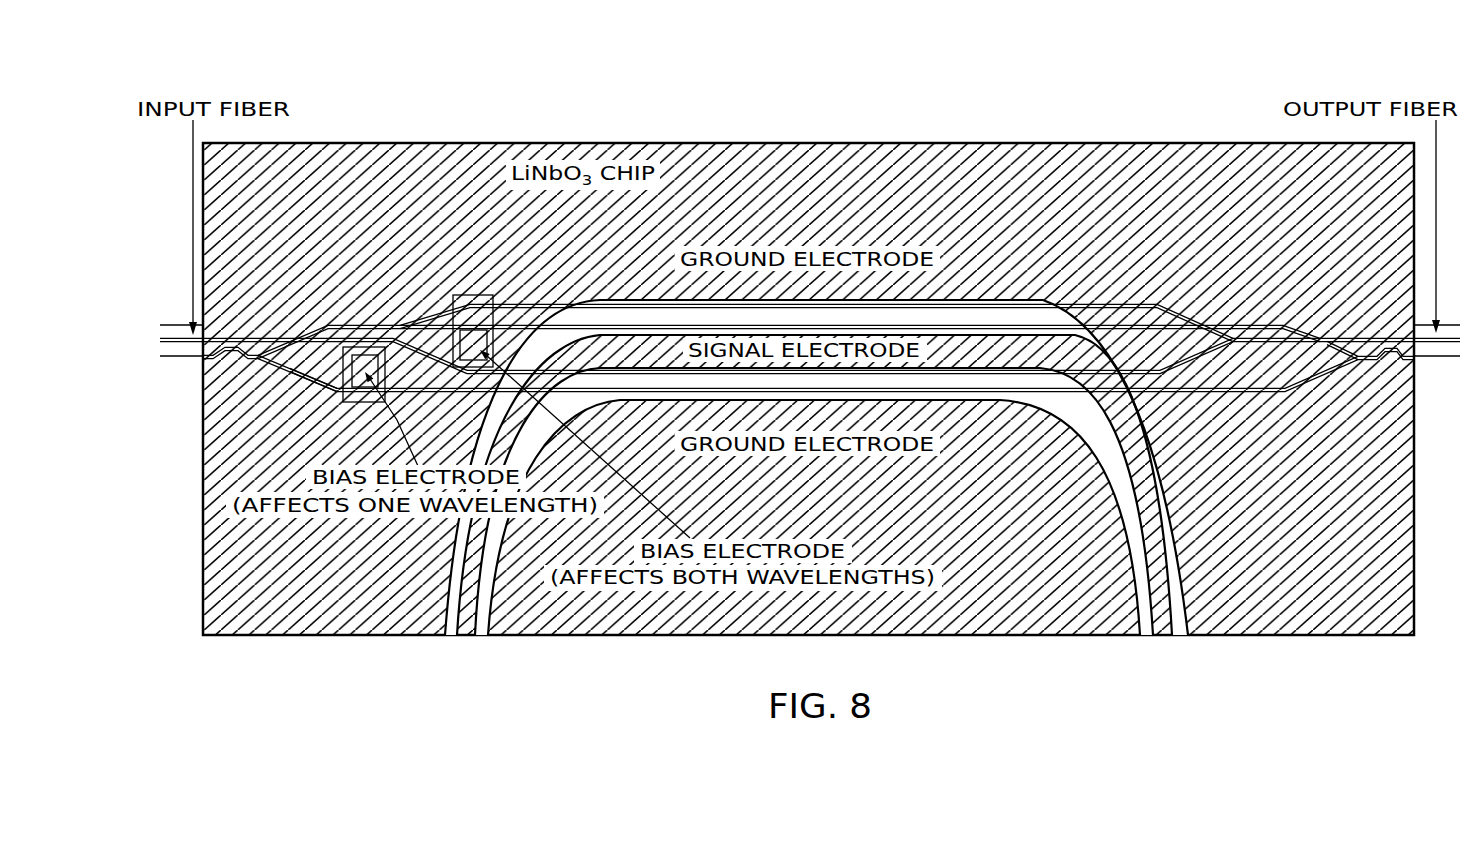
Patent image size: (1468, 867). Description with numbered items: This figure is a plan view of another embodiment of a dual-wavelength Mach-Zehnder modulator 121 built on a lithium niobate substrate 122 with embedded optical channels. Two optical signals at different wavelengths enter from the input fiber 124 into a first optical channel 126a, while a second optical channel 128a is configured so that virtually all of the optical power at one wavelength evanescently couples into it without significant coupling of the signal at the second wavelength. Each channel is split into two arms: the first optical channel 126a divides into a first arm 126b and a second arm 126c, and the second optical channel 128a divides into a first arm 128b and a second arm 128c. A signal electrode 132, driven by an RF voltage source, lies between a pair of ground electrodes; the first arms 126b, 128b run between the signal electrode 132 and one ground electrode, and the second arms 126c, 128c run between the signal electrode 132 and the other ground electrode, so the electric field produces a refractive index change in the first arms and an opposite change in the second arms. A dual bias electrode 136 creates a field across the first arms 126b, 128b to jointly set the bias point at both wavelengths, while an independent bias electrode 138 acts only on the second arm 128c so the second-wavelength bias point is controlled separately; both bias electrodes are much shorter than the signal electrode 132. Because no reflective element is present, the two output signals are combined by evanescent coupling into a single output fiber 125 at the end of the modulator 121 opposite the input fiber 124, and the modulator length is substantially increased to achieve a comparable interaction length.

The modulator 121 is at (895, 111).
The lithium niobate substrate 122 is at (448, 628).
The input fiber 124 is at (189, 345).
The output fiber 125 is at (1430, 347).
The first optical channel 126a is at (258, 336).
The first arm 126b is at (438, 320).
The second arm 126c is at (418, 364).
The second optical channel 128a is at (261, 364).
The first arm 128b is at (324, 323).
The second arm 128c is at (316, 386).
The signal electrode 132 is at (464, 628).
The dual bias electrode 136 is at (477, 333).
The independent bias electrode 138 is at (363, 390).